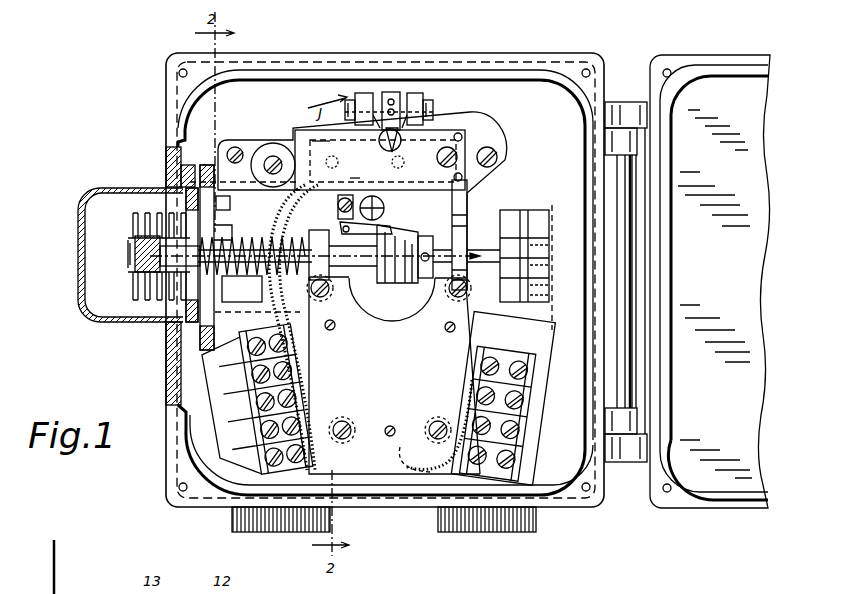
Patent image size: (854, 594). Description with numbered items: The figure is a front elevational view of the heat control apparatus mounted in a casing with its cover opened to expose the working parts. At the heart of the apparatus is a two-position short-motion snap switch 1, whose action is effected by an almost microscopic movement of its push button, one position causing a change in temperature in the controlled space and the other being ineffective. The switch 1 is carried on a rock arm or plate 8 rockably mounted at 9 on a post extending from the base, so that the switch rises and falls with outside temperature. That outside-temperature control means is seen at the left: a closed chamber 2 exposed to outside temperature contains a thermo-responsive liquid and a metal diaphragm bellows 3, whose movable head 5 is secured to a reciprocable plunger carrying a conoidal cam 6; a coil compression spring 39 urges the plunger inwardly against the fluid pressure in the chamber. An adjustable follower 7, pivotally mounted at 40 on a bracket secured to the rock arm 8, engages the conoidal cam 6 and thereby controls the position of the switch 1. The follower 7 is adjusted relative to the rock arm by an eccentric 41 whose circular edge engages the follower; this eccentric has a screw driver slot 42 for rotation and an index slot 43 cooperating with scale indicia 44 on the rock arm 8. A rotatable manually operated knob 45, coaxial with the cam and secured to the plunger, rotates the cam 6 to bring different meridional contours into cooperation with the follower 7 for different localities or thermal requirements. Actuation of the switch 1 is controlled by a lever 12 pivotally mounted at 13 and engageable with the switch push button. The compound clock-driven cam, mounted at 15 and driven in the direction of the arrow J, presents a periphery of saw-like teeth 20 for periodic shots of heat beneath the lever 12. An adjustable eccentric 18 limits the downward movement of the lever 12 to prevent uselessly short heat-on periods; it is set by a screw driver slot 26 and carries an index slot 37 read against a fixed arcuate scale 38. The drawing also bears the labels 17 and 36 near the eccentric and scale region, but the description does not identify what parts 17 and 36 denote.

The two-position short-motion snap switch 1 is at (402, 196).
The closed chamber 2 is at (90, 193).
The metal diaphragm bellows 3 is at (146, 294).
The movable head 5 is at (130, 260).
The conoidal cam 6 is at (415, 240).
The adjustable follower 7 is at (348, 201).
The rock arm 8 is at (455, 200).
The rockable mounting 9 is at (274, 158).
The lever 12 is at (257, 401).
The pivot 13 is at (430, 102).
The cam mounting 15 is at (390, 292).
The wheel 17 is at (386, 206).
The adjustable eccentric 18 is at (372, 152).
The saw-like teeth 20 is at (538, 205).
The screw driver slot 26 is at (388, 194).
The pointer 36 is at (387, 150).
The index slot 37 is at (420, 127).
The fixed arcuate scale 38 is at (363, 141).
The coil compression spring 39 is at (315, 278).
The follower pivot 40 is at (393, 374).
The eccentric 41 is at (333, 207).
The screw driver slot 42 is at (538, 210).
The index slot 43 is at (467, 160).
The scale indicia 44 is at (457, 142).
The rotatable manually operated knob 45 is at (534, 220).